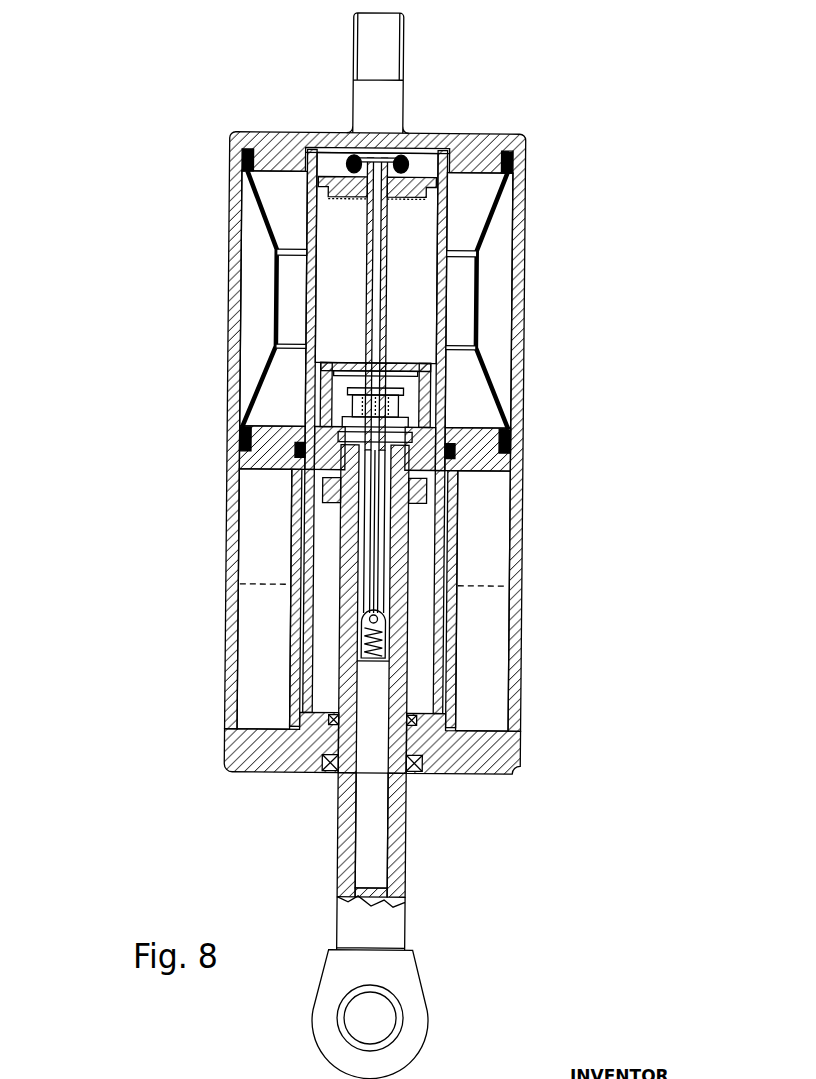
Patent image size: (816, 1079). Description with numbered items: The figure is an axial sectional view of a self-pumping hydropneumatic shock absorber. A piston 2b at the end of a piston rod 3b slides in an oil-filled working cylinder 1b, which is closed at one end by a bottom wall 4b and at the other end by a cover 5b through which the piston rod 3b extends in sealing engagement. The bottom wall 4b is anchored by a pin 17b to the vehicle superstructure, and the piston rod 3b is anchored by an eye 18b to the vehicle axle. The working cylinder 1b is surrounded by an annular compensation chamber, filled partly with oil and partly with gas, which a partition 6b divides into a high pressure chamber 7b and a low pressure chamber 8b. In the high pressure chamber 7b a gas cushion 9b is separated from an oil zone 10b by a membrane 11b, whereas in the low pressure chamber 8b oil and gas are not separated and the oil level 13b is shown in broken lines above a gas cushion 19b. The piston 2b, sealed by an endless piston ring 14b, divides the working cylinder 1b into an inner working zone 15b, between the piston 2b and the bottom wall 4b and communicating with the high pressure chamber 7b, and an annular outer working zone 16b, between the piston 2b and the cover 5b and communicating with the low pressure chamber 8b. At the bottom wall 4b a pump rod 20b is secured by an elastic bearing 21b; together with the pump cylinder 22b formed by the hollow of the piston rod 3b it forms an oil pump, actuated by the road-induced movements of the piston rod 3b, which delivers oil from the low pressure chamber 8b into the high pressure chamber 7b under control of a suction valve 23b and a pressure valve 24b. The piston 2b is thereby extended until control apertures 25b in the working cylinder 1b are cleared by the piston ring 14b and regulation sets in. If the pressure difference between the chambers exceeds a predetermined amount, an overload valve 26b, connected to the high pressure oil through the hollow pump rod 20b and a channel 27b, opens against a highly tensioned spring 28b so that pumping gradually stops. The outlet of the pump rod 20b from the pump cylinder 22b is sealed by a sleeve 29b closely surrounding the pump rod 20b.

The working cylinder 1b is at (308, 662).
The piston 2b is at (307, 425).
The piston rod 3b is at (345, 850).
The bottom wall 4b is at (252, 145).
The cover 5b is at (242, 750).
The partition 6b is at (240, 463).
The high pressure chamber 7b is at (257, 293).
The low pressure chamber 8b is at (253, 615).
The gas cushion 9b is at (252, 233).
The oil zone 10b is at (267, 193).
The membrane 11b is at (275, 362).
The oil level 13b is at (483, 585).
The piston ring 14b is at (437, 466).
The inner working zone 15b is at (415, 243).
The outer working zone 16b is at (417, 675).
The pin 17b is at (388, 107).
The eye 18b is at (373, 1018).
The gas cushion 19b is at (258, 520).
The pump rod 20b is at (390, 287).
The elastic bearing 21b is at (437, 135).
The pump cylinder 22b is at (383, 848).
The suction valve 23b is at (425, 487).
The pressure valve 24b is at (415, 437).
The control apertures 25b is at (317, 478).
The overload valve 26b is at (385, 622).
The channel 27b is at (312, 133).
The spring 28b is at (388, 663).
The sleeve 29b is at (393, 407).